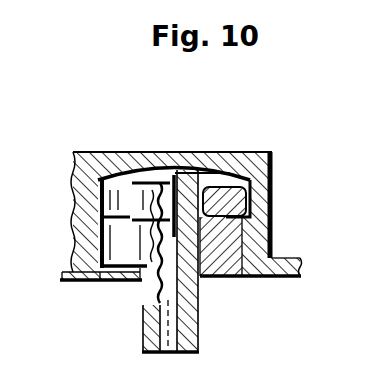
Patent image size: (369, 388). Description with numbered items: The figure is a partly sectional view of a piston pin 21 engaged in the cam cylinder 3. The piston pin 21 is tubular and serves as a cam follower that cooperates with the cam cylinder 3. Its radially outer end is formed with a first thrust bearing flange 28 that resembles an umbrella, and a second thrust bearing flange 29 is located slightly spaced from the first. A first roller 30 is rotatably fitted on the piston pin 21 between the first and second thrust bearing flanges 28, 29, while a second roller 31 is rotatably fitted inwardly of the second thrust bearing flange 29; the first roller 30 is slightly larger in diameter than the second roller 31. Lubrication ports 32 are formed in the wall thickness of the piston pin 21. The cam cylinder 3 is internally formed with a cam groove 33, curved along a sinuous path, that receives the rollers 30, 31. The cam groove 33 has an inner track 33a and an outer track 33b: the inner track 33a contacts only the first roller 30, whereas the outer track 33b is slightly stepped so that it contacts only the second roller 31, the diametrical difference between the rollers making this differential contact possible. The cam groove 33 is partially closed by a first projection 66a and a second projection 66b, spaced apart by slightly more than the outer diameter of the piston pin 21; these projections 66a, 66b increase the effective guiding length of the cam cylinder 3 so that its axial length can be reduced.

The cam cylinder 3 is at (262, 153).
The piston pin 21 is at (198, 345).
The first thrust bearing flange 28 is at (160, 184).
The second thrust bearing flange 29 is at (244, 204).
The first roller 30 is at (112, 178).
The second roller 31 is at (127, 248).
The lubrication ports 32 is at (198, 308).
The cam groove 33 is at (206, 170).
The inner track 33a is at (78, 257).
The outer track 33b is at (258, 262).
The first projection 66a is at (118, 283).
The second projection 66b is at (200, 295).